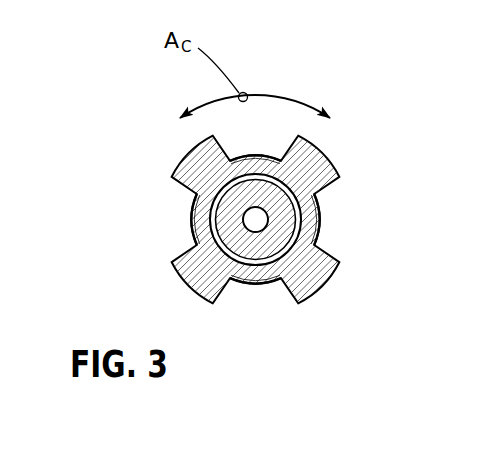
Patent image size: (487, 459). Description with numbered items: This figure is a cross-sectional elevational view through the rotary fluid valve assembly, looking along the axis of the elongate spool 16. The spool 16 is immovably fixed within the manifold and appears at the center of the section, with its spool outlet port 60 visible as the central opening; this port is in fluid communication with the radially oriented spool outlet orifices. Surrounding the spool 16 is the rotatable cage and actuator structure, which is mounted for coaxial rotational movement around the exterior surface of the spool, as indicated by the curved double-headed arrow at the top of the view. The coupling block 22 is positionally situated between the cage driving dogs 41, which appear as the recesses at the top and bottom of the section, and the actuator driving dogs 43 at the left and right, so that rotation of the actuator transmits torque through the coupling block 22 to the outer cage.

The spool 16 is at (278, 232).
The coupling block 22 is at (208, 268).
The cage driving dogs 41 is at (271, 136).
The actuator driving dogs 43 is at (172, 204).
The spool outlet port 60 is at (252, 223).